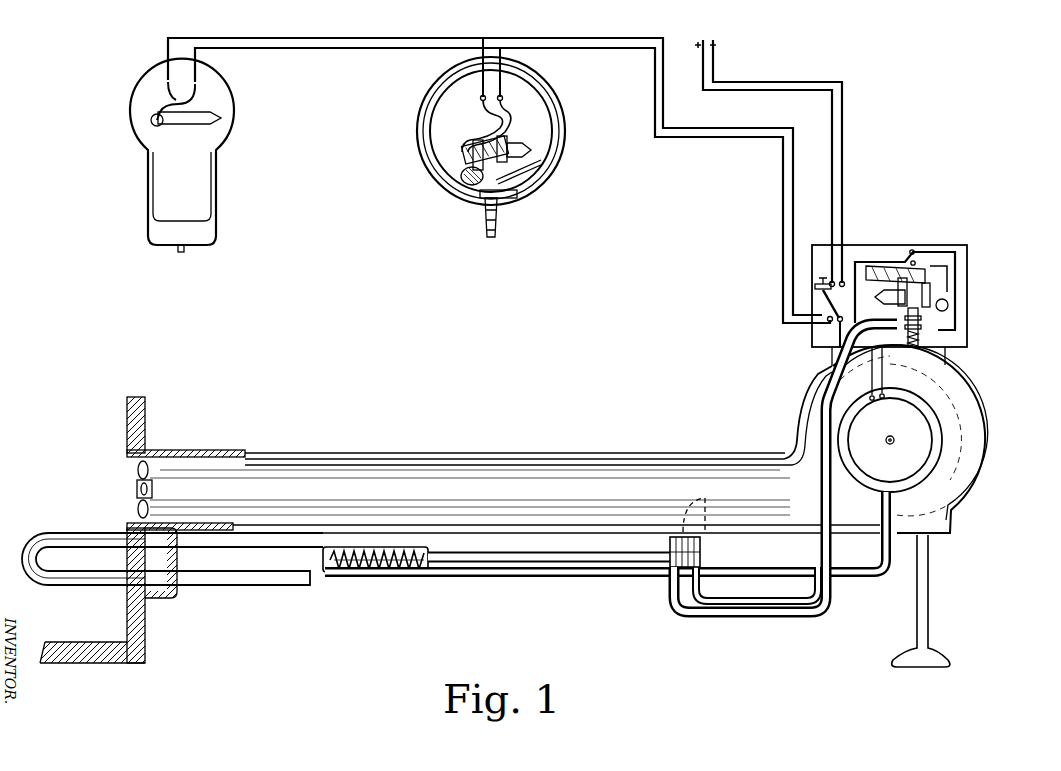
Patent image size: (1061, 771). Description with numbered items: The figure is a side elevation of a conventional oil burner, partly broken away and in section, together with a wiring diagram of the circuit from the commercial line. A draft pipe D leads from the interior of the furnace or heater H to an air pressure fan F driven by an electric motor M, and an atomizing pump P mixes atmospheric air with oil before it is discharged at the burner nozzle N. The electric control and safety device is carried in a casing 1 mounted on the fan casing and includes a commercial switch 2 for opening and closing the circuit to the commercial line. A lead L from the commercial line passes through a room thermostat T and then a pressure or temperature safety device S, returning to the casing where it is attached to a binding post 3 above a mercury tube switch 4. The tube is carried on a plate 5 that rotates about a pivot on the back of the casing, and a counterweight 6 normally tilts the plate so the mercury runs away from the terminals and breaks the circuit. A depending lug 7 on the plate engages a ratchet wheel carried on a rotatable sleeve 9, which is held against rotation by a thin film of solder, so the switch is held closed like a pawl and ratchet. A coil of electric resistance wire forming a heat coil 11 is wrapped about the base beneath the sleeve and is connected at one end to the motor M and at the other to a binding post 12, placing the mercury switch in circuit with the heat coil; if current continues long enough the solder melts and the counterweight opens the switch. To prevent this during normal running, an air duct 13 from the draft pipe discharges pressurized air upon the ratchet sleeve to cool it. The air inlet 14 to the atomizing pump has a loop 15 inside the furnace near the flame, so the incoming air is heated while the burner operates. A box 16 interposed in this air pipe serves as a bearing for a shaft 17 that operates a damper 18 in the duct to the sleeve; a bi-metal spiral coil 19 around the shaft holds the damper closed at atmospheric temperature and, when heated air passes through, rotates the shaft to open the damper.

The lead L is at (352, 36).
The room thermostat T is at (200, 173).
The pressure or temperature safety device S is at (548, 166).
The casing 1 is at (848, 247).
The switch 2 is at (820, 300).
The binding post 3 is at (913, 263).
The binding post 12 is at (912, 250).
The counterweight 6 is at (867, 273).
The plate 5 is at (933, 283).
The mercury tube switch 4 is at (947, 300).
The lug 7 is at (920, 320).
The sleeve 9 is at (920, 327).
The heat coil 11 is at (920, 340).
The air duct 13 is at (818, 470).
The air pressure fan F is at (968, 402).
The atomizing pump P is at (922, 432).
The electric motor M is at (933, 453).
The furnace or heater H is at (127, 415).
The draft pipe D is at (475, 462).
The burner nozzle N is at (132, 490).
The loop 15 is at (72, 577).
The box 16 is at (362, 566).
The bi-metal spiral coil 19 is at (392, 563).
The shaft 17 is at (507, 560).
The damper 18 is at (702, 543).
The air inlet 14 is at (861, 573).